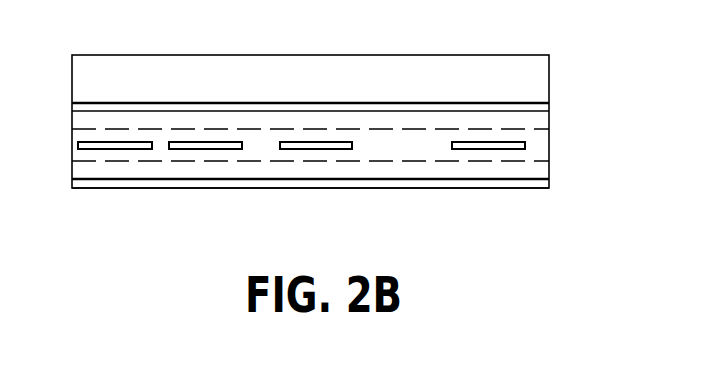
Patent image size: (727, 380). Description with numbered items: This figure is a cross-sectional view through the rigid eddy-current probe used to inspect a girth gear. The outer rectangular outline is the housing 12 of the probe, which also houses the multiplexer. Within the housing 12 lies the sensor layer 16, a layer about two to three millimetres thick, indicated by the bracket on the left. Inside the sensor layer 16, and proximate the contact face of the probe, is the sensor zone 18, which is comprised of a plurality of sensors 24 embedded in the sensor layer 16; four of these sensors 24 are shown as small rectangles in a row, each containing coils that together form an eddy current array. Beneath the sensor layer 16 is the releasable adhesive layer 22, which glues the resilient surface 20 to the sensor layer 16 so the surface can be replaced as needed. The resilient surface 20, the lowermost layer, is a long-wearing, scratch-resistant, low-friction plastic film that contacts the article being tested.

The housing 12 is at (530, 70).
The sensor layer 16 is at (60, 101).
The sensor zone 18 is at (540, 143).
The resilient surface 20 is at (532, 190).
The releasable adhesive layer 22 is at (552, 174).
The sensor 24 is at (115, 144).